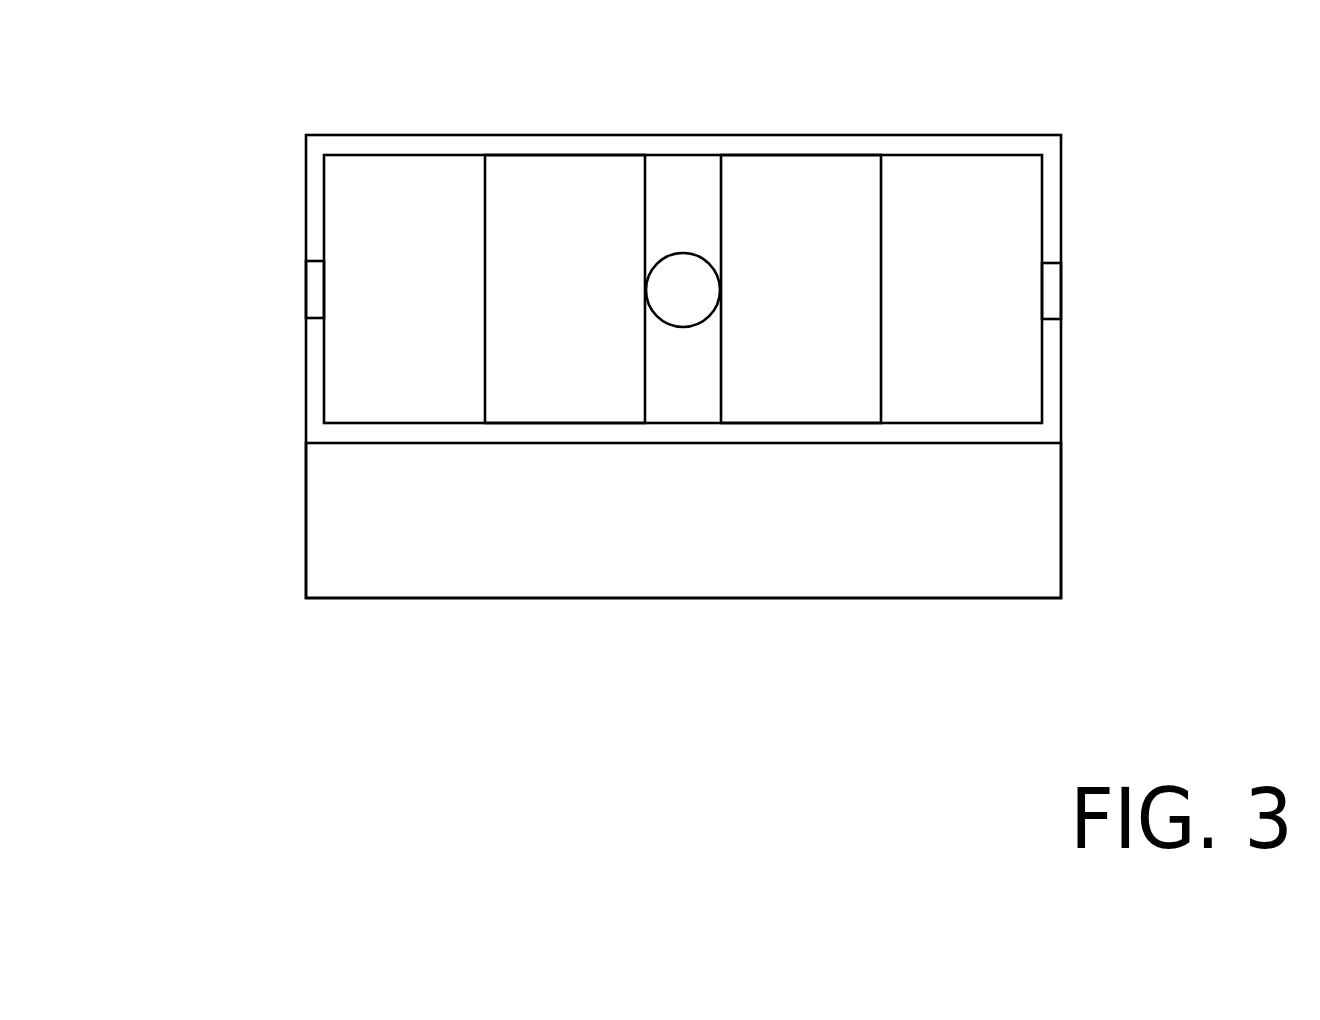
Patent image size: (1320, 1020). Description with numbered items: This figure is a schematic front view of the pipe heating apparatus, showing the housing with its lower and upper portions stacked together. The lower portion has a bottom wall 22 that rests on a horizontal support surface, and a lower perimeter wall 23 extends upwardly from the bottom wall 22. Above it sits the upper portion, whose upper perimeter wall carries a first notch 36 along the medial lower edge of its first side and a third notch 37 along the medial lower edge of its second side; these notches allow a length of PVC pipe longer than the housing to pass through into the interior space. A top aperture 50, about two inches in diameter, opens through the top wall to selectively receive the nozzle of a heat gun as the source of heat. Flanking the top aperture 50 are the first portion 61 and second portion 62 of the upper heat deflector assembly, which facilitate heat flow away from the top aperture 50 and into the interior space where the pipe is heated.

The bottom wall 22 is at (682, 600).
The lower perimeter wall 23 is at (1023, 535).
The first notch 36 is at (1063, 292).
The third notch 37 is at (304, 288).
The top aperture 50 is at (683, 250).
The first portion 61 is at (827, 195).
The second portion 62 is at (560, 200).